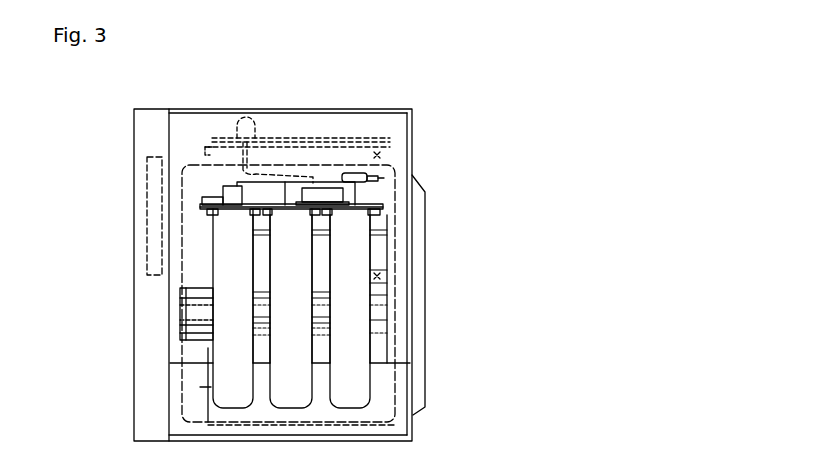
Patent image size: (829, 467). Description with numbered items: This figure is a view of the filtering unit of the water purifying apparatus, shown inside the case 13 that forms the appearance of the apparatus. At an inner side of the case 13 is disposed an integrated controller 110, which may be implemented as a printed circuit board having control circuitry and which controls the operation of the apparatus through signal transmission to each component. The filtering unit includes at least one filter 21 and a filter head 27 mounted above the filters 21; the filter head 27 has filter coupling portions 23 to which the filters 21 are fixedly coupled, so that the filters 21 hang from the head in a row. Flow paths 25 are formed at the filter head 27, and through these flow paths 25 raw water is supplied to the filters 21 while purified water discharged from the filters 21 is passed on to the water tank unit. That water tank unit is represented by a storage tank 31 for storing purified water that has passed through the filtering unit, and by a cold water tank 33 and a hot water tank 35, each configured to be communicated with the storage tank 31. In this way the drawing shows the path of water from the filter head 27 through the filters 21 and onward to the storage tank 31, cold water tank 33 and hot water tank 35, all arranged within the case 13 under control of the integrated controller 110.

The case 13 is at (135, 131).
The integrated controller 110 is at (150, 212).
The filter 21 is at (215, 338).
The filter coupling portion 23 is at (263, 215).
The flow path 25 is at (325, 210).
The filter head 27 is at (268, 190).
The storage tank 31 is at (380, 155).
The cold water tank 33 is at (380, 276).
The hot water tank 35 is at (215, 410).